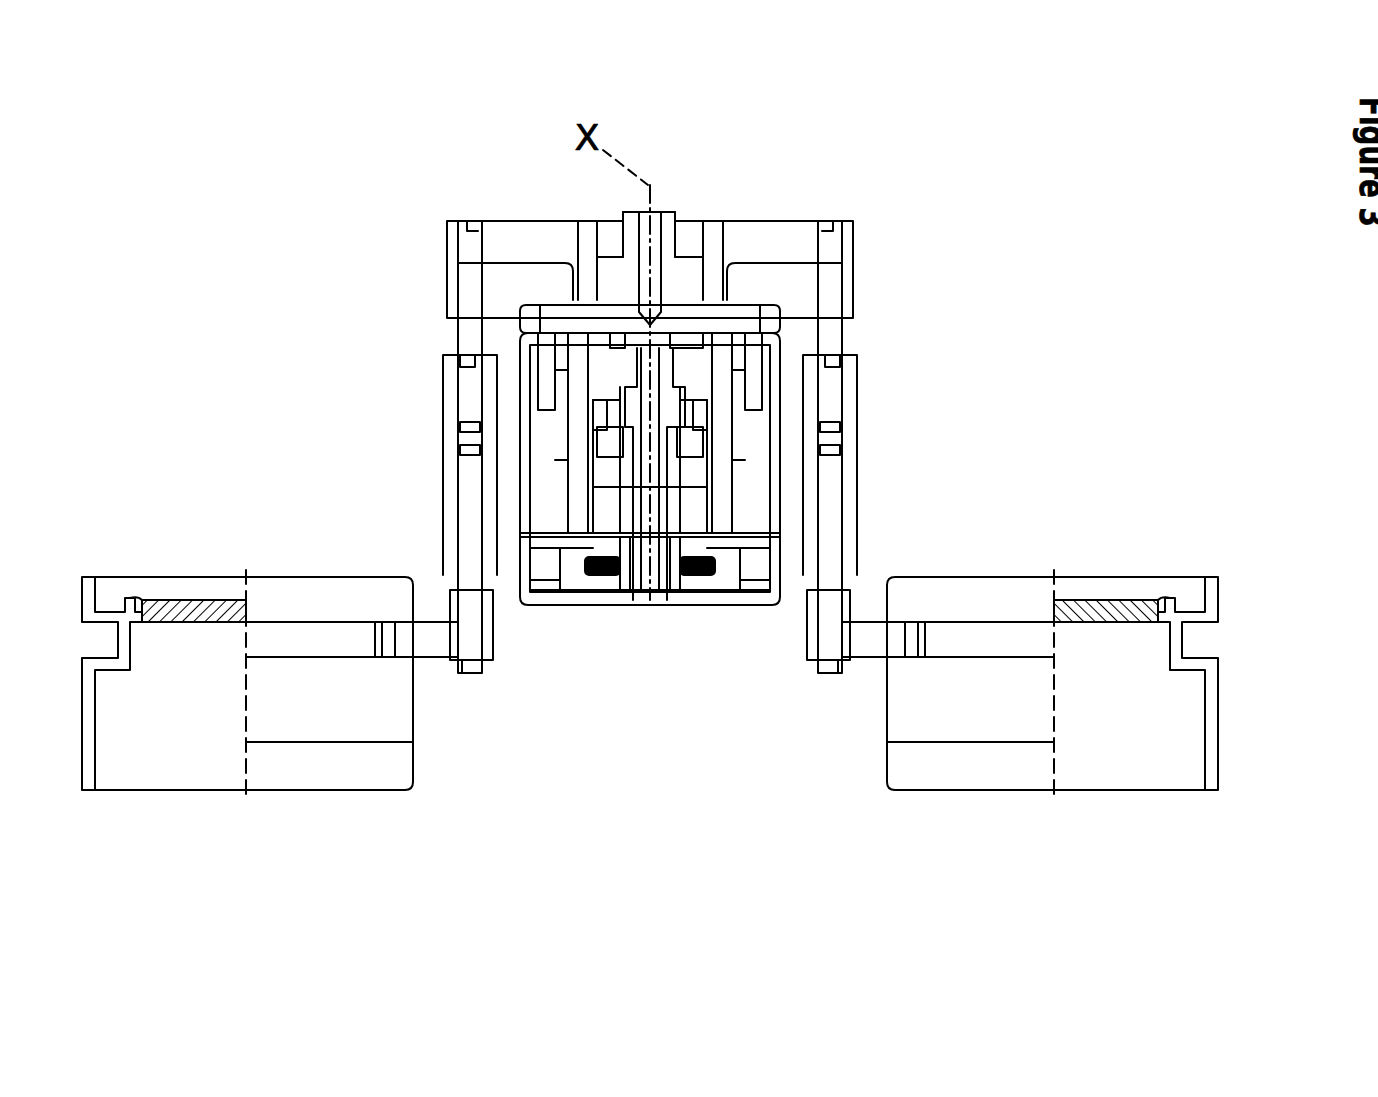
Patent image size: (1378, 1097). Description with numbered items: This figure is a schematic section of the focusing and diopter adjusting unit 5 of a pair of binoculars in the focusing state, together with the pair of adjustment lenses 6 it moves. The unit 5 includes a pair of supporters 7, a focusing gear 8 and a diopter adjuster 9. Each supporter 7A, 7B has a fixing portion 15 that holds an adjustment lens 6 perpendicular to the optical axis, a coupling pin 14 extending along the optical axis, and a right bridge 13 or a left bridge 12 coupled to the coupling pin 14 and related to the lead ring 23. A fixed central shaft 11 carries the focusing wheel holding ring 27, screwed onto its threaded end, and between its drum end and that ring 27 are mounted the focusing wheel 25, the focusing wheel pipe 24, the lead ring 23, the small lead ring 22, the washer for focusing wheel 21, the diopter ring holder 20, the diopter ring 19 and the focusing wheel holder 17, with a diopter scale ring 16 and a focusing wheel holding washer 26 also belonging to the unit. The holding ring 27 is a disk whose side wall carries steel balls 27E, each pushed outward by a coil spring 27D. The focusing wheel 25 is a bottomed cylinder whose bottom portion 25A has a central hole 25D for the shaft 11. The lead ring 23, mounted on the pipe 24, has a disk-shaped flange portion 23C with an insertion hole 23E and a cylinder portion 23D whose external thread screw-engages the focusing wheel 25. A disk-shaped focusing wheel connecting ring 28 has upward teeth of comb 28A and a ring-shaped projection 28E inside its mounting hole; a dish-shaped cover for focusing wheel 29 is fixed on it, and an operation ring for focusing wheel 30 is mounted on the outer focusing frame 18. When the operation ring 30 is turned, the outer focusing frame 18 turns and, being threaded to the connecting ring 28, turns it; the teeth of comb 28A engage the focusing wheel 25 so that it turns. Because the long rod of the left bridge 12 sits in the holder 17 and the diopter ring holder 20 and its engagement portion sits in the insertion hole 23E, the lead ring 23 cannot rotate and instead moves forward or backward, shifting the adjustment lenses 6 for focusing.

The focusing and diopter adjusting unit 5 is at (967, 155).
The adjustment lens 6 is at (205, 603).
The supporter 7 is at (242, 468).
The supporter 7A is at (832, 537).
The supporter 7B is at (460, 536).
The focusing gear 8 is at (549, 207).
The diopter adjuster 9 is at (758, 268).
The fixed central shaft 11 is at (652, 262).
The left bridge 12 is at (542, 231).
The right bridge 13 is at (788, 252).
The coupling pin 14 is at (828, 347).
The fixing portion 15 is at (430, 655).
The diopter scale ring 16 is at (620, 342).
The focusing wheel holder 17 is at (607, 306).
The outer focusing frame 18 is at (765, 485).
The diopter ring 19 is at (740, 387).
The diopter ring holder 20 is at (612, 326).
The washer for focusing wheel 21 is at (712, 445).
The small lead ring 22 is at (745, 470).
The lead ring 23 is at (607, 485).
The disk-shaped flange portion 23C is at (655, 590).
The cylinder portion 23D is at (702, 452).
The insertion hole 23E is at (630, 548).
The focusing wheel pipe 24 is at (547, 520).
The focusing wheel 25 is at (630, 540).
The bottom portion 25A is at (668, 560).
The central hole 25D is at (640, 560).
The focusing wheel holding washer 26 is at (615, 590).
The focusing wheel holding ring 27 is at (597, 593).
The coil spring 27D is at (585, 560).
The steel ball 27E is at (592, 576).
The focusing wheel connecting ring 28 is at (735, 515).
The teeth of comb 28A is at (735, 560).
The ring-shaped projection 28E is at (700, 570).
The cover for focusing wheel 29 is at (573, 598).
The operation ring for focusing wheel 30 is at (745, 590).